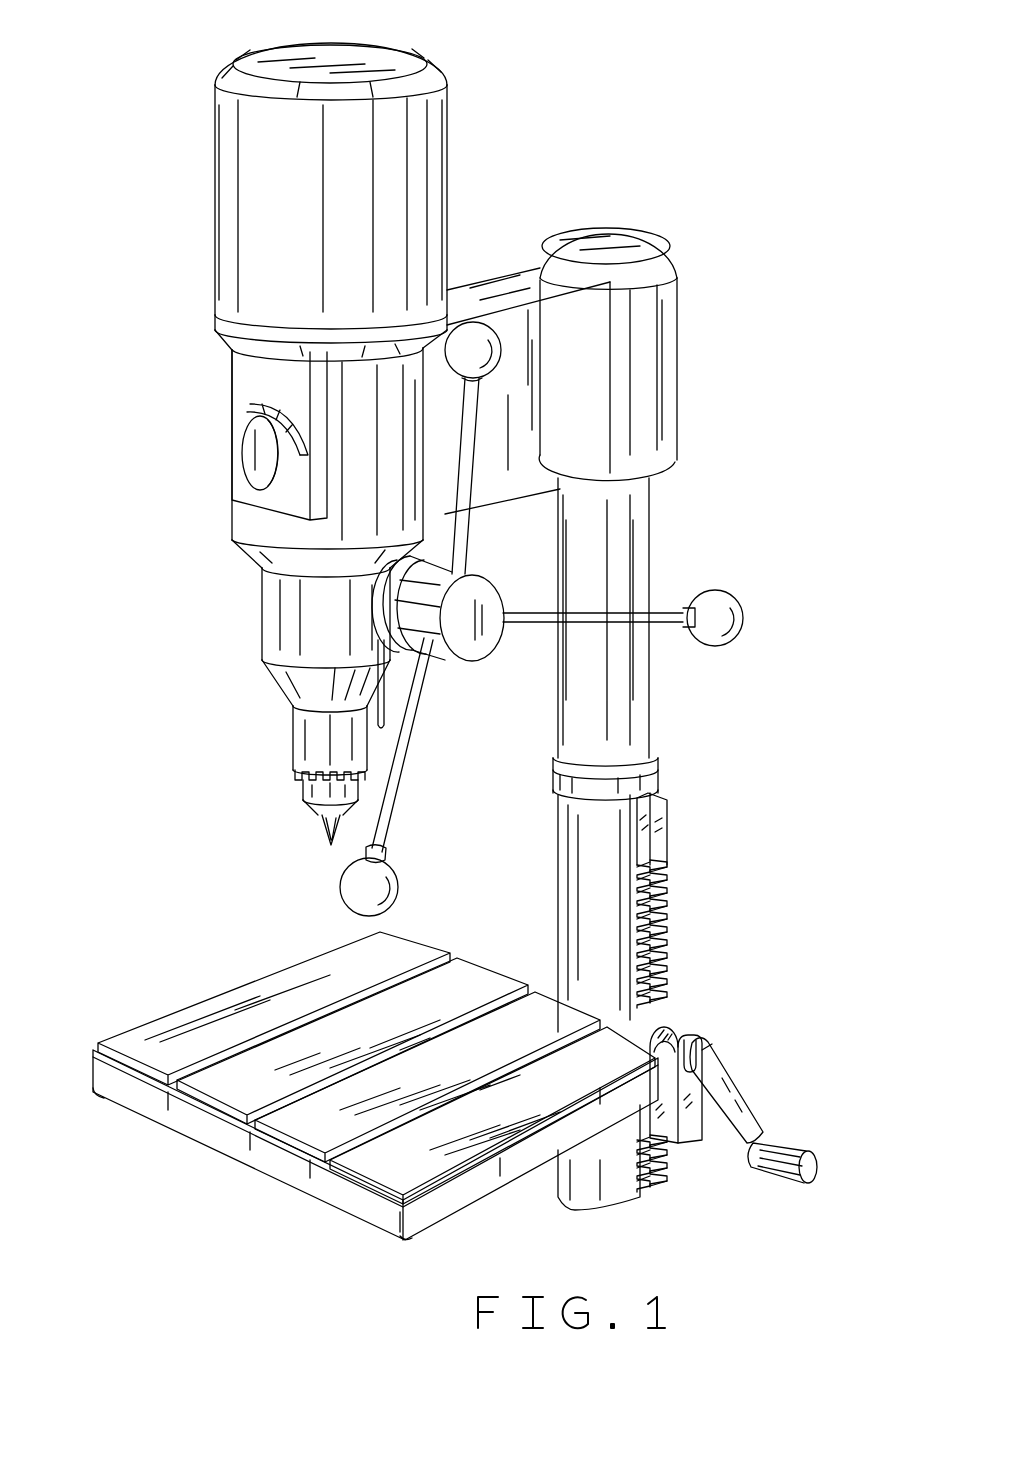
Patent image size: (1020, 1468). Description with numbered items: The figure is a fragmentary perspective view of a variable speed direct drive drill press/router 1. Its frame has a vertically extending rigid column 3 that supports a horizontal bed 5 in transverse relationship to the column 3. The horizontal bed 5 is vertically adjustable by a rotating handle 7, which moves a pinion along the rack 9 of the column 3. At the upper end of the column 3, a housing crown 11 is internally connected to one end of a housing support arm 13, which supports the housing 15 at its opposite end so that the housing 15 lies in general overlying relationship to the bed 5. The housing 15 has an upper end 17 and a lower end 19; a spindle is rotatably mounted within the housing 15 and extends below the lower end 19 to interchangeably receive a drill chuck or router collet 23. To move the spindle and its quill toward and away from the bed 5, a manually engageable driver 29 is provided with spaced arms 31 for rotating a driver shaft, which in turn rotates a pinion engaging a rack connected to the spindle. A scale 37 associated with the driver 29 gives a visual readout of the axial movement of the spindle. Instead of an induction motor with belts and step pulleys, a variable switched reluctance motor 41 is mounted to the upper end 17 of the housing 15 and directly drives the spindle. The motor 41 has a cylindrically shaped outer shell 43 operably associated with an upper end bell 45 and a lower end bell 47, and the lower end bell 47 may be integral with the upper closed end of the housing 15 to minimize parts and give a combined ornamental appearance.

The variable speed direct drive drill press/router 1 is at (702, 474).
The column 3 is at (597, 890).
The horizontal bed 5 is at (203, 1035).
The rotating handle 7 is at (730, 1103).
The rack 9 is at (668, 946).
The housing crown 11 is at (650, 353).
The housing support arm 13 is at (500, 280).
The housing 15 is at (240, 527).
The upper end 17 is at (355, 387).
The lower end 19 is at (283, 680).
The drill chuck or router collet 23 is at (307, 733).
The driver 29 is at (470, 637).
The spaced arms 31 is at (637, 613).
The scale 37 is at (383, 725).
The variable switched reluctance motor 41 is at (205, 204).
The outer shell 43 is at (272, 237).
The upper end bell 45 is at (258, 62).
The lower end bell 47 is at (220, 336).